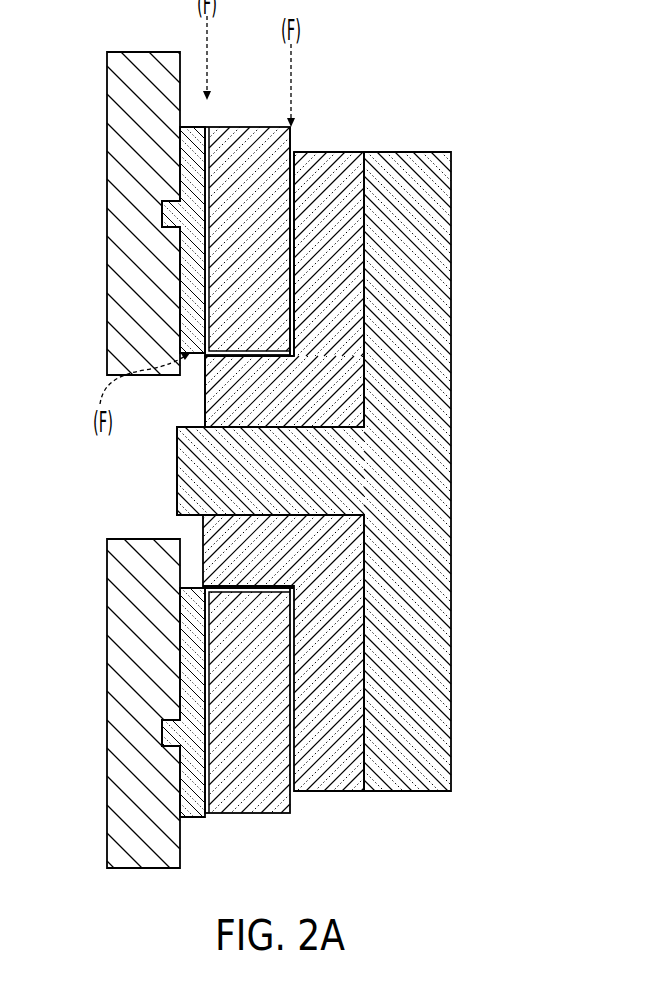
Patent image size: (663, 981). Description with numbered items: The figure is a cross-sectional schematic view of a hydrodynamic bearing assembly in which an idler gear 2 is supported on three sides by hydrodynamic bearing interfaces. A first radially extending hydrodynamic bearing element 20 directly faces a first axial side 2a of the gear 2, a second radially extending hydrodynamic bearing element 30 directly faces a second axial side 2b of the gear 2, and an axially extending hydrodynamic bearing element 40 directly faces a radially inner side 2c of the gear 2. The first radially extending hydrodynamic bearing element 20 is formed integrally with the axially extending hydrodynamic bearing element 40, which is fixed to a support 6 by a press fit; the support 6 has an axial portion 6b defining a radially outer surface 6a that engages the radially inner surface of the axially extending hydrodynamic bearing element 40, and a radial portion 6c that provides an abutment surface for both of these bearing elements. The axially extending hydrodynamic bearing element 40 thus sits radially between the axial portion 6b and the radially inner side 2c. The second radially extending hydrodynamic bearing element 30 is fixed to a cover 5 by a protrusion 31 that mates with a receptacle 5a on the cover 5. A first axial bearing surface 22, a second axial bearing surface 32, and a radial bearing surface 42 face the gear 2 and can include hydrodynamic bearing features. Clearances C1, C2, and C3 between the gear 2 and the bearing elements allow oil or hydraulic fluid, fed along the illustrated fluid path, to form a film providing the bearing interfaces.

The cover 5 is at (127, 100).
The protrusion 31 is at (163, 218).
The second radially extending hydrodynamic bearing element 30 is at (190, 267).
The clearance C2 is at (204, 127).
The gear 2 is at (230, 135).
The first axial side 2a is at (287, 227).
The clearance C1 is at (297, 265).
The first radially extending hydrodynamic bearing element 20 is at (330, 330).
The radially outer surface 6a is at (313, 425).
The axial portion 6b is at (307, 482).
The axially extending hydrodynamic bearing element 40 is at (300, 550).
The radial bearing surface 42 is at (247, 363).
The clearance C3 is at (228, 585).
The second axial side 2b is at (202, 662).
The receptacle 5a is at (163, 738).
The second axial bearing surface 32 is at (203, 794).
The radially inner side 2c is at (268, 584).
The support 6 is at (423, 668).
The radial portion 6c is at (363, 705).
The first axial bearing surface 22 is at (297, 750).